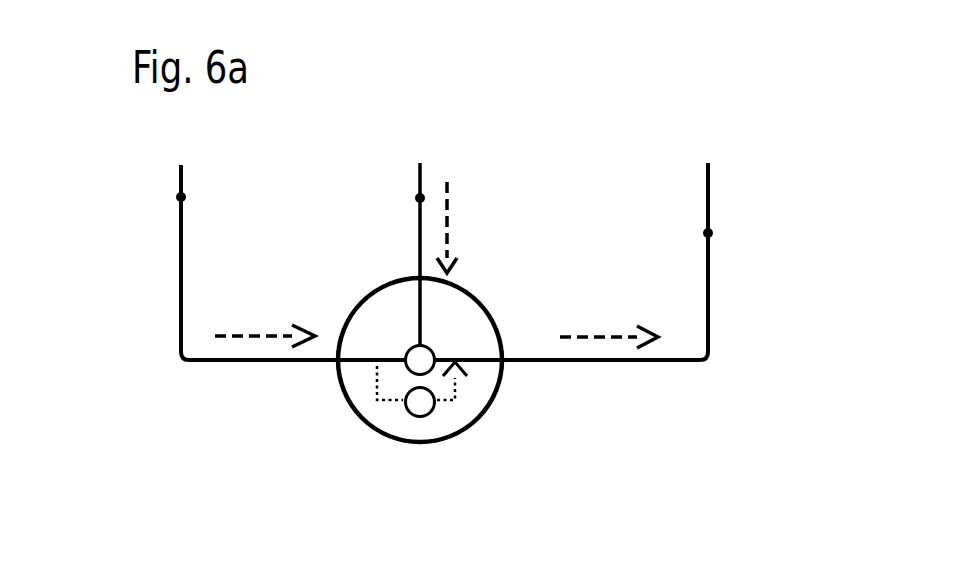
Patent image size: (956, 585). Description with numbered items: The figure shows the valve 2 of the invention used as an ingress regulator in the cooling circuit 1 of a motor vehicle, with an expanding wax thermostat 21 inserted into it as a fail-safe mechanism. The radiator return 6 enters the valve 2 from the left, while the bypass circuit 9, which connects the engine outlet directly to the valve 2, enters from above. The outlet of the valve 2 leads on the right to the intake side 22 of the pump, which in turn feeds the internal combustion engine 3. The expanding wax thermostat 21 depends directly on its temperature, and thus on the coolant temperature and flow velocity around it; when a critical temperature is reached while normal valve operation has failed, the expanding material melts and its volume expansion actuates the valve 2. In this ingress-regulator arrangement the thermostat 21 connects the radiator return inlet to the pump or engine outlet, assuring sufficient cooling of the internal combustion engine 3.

The cooling circuit 1 is at (329, 372).
The valve 2 is at (262, 467).
The internal combustion engine 3 is at (511, 347).
The radiator return 6 is at (181, 197).
The bypass circuit 9 is at (420, 198).
The expanding wax thermostat 21 is at (422, 412).
The intake side 22 is at (708, 233).